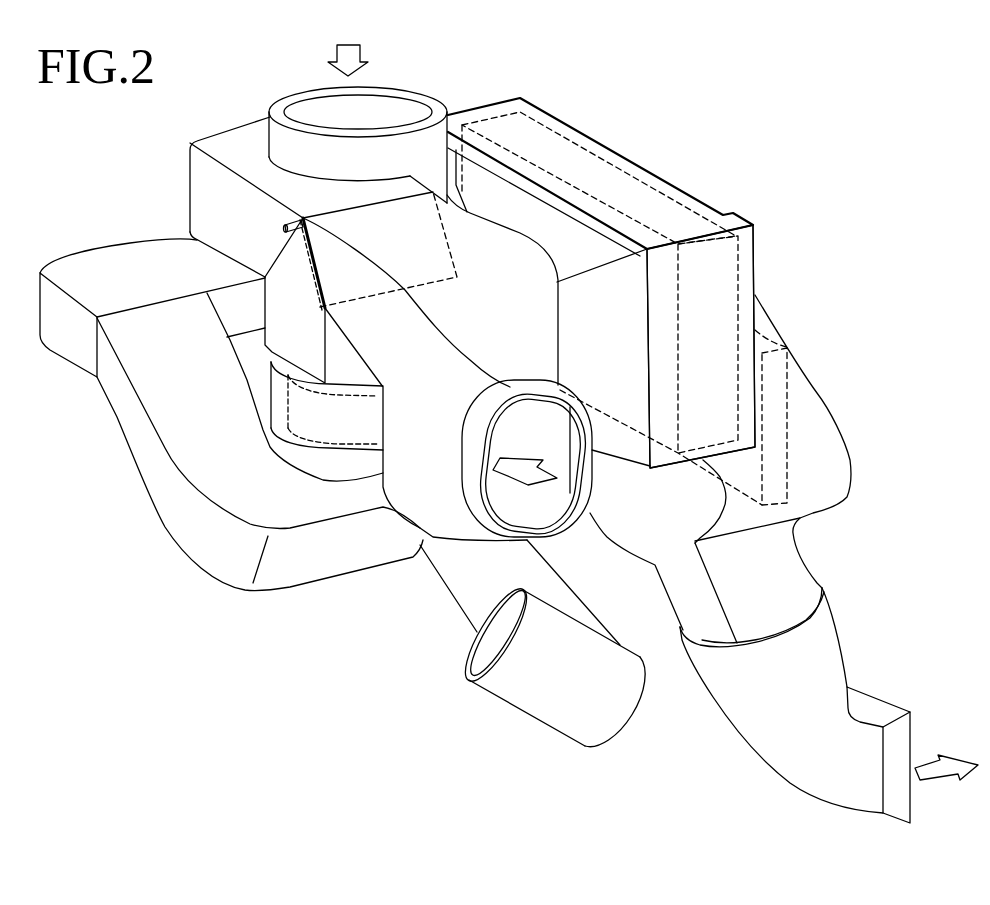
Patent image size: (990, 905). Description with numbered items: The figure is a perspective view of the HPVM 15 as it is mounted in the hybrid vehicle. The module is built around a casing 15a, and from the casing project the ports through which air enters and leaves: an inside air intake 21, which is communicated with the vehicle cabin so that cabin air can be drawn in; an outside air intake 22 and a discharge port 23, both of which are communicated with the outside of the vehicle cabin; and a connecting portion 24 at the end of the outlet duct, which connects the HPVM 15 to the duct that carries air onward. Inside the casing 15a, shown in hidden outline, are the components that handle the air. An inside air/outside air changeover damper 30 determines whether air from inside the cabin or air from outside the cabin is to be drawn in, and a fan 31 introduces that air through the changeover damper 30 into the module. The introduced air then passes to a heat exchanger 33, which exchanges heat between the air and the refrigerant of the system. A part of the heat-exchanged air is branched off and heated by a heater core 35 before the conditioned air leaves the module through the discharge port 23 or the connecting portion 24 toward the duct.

The HPVM 15 is at (624, 112).
The casing 15a is at (758, 245).
The inside air intake 21 is at (305, 118).
The outside air intake 22 is at (557, 515).
The discharge port 23 is at (472, 660).
The connecting portion 24 is at (913, 733).
The inside air/outside air changeover damper 30 is at (303, 255).
The fan 31 is at (330, 447).
The heat exchanger 33 is at (653, 172).
The heater core 35 is at (800, 437).